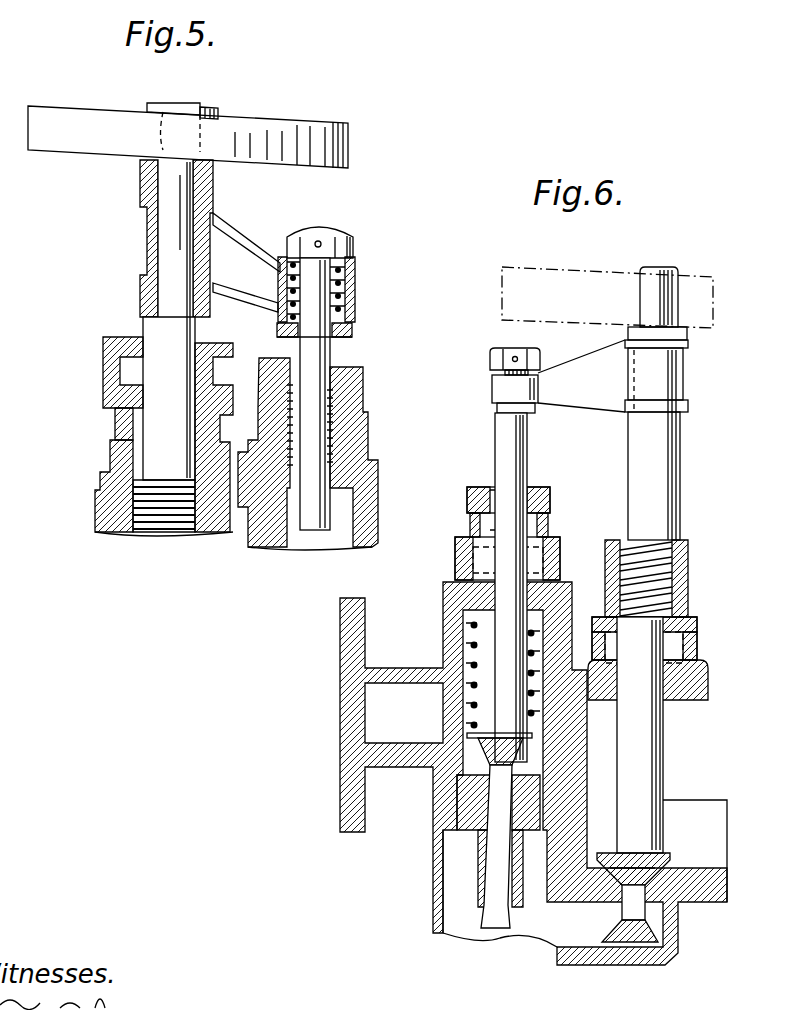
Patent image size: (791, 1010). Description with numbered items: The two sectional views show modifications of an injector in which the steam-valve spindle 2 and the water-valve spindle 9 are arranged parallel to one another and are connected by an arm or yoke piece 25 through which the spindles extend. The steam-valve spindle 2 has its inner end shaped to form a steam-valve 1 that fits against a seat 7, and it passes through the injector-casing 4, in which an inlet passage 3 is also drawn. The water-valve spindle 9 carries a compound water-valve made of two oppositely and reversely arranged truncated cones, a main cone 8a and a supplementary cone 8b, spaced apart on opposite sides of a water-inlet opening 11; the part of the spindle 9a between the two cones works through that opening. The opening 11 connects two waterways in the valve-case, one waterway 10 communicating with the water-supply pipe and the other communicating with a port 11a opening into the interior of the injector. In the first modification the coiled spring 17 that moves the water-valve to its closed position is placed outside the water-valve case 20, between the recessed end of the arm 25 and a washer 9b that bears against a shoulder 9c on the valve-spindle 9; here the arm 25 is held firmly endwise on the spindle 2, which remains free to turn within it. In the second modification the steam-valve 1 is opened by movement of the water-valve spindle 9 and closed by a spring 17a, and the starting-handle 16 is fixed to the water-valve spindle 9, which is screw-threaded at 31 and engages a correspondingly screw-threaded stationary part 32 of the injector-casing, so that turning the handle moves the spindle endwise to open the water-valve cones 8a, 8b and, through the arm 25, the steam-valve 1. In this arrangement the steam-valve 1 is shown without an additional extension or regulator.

In FIG. 6, the steam-valve 1 is at (476, 751).
In FIG. 5, the steam-valve spindle 2 is at (173, 346).
In FIG. 6, the steam-valve spindle 2 is at (515, 555).
In FIG. 6, the inlet passage 3 is at (533, 726).
In FIG. 5, the injector-casing 4 is at (97, 516).
In FIG. 6, the seat 7 is at (527, 753).
In FIG. 6, the main cone 8a is at (633, 869).
In FIG. 6, the supplementary cone 8b is at (630, 931).
In FIG. 5, the water-valve spindle 9 is at (320, 378).
In FIG. 6, the water-valve spindle 9 is at (652, 560).
In FIG. 6, the spindle part between the cones 9a is at (633, 902).
In FIG. 5, the washer 9b is at (352, 333).
In FIG. 5, the shoulder 9c is at (286, 338).
In FIG. 6, the waterway 10 is at (695, 851).
In FIG. 6, the water-inlet opening 11 is at (616, 877).
In FIG. 6, the port 11a is at (502, 881).
In FIG. 5, the starting-handle 16 is at (188, 135).
In FIG. 6, the starting-handle 16 is at (607, 297).
In FIG. 5, the coiled spring 17 is at (288, 283).
In FIG. 6, the spring 17a is at (474, 719).
In FIG. 5, the water-valve case 20 is at (308, 454).
In FIG. 5, the arm or yoke piece 25 is at (224, 308).
In FIG. 6, the arm or yoke piece 25 is at (581, 376).
In FIG. 6, the screw-thread 31 is at (646, 565).
In FIG. 6, the screw-threaded stationary part 32 is at (604, 562).